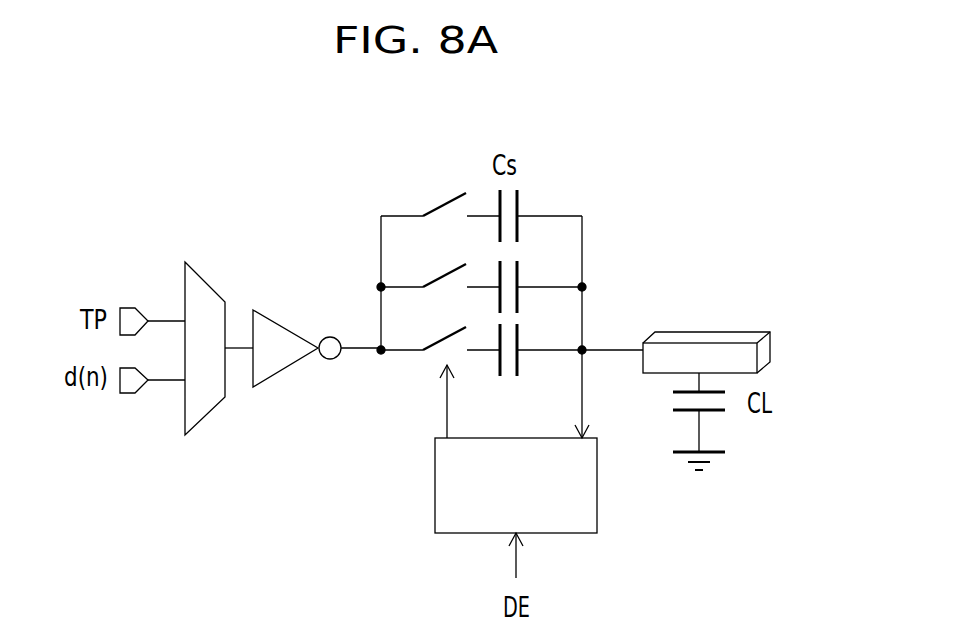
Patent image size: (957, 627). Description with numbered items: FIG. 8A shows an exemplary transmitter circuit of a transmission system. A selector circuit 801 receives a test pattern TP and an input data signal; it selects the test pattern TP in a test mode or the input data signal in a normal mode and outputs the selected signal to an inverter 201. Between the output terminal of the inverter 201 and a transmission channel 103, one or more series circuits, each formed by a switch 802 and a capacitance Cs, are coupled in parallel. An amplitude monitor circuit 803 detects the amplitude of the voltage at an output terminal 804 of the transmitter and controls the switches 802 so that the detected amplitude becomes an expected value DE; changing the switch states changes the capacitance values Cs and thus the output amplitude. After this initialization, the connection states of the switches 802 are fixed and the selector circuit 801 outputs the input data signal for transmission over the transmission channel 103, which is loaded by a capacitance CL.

The selector circuit 801 is at (210, 415).
The inverter 201 is at (286, 324).
The switches 802 is at (445, 207).
The output terminal 804 is at (584, 346).
The amplitude monitor circuit 803 is at (435, 468).
The transmission channel 103 is at (712, 330).